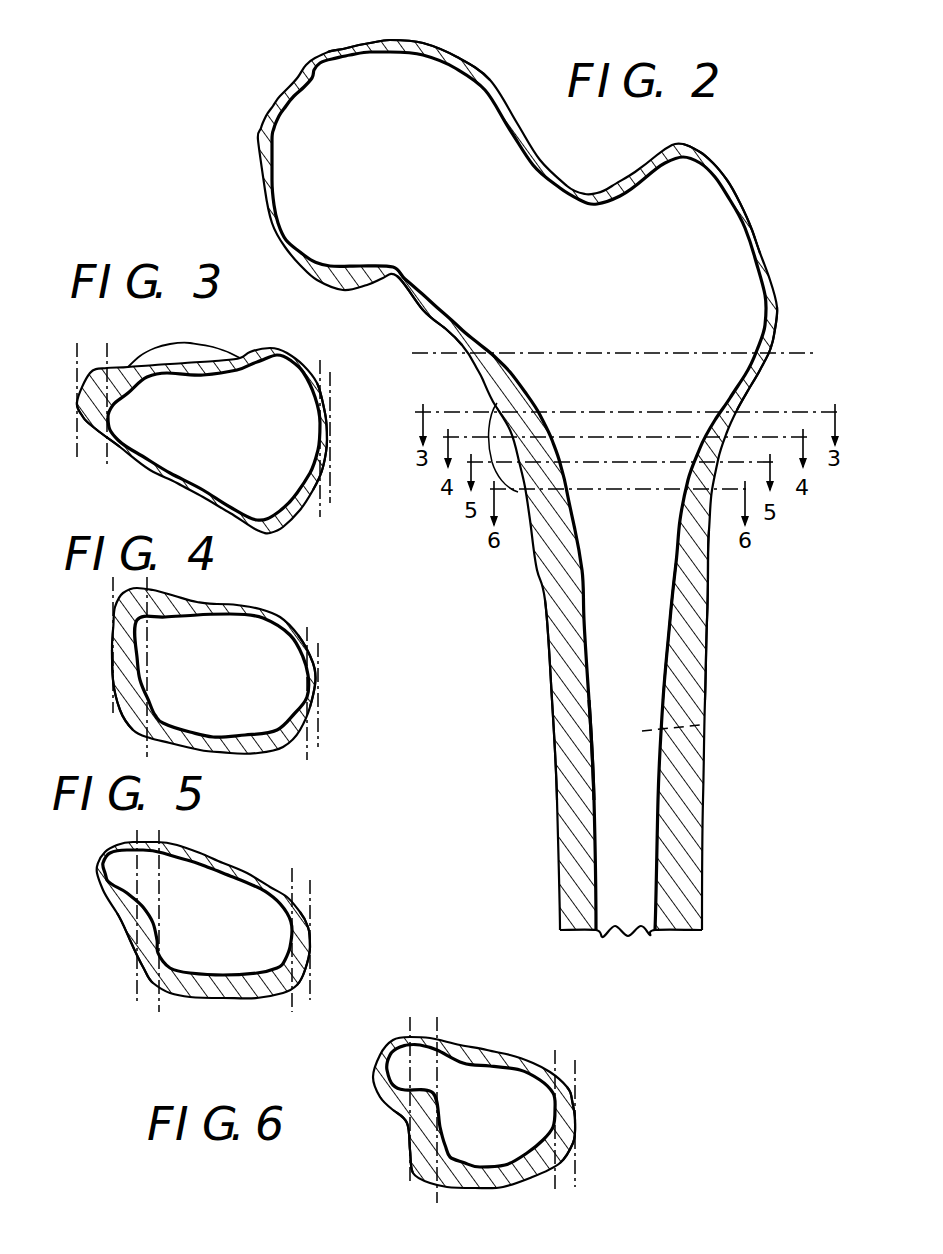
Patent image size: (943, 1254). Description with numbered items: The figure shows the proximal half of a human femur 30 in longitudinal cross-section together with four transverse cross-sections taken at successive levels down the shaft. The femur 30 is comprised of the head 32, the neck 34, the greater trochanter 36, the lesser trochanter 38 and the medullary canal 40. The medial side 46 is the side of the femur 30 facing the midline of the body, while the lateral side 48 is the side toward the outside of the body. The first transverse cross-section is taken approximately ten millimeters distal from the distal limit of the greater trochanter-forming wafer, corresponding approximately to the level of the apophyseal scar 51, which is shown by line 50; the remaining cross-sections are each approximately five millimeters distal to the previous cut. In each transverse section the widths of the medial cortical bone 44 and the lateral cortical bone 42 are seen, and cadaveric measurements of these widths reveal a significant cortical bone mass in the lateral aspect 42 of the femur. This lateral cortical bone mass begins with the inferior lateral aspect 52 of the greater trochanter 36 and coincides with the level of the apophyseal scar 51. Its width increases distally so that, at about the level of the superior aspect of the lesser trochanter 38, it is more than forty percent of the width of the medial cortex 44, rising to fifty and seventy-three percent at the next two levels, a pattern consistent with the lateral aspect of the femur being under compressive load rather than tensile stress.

In FIG. 2, the femur 30 is at (748, 792).
In FIG. 2, the head 32 is at (430, 73).
In FIG. 2, the neck 34 is at (432, 310).
In FIG. 2, the greater trochanter 36 is at (716, 218).
In FIG. 2, the lesser trochanter 38 is at (519, 493).
In FIG. 2, the medullary canal 40 is at (713, 717).
In FIG. 2, the lateral cortical bone 42 is at (706, 614).
In FIG. 3, the lateral cortical bone 42 is at (335, 445).
In FIG. 4, the lateral cortical bone 42 is at (315, 673).
In FIG. 5, the lateral cortical bone 42 is at (297, 935).
In FIG. 6, the lateral cortical bone 42 is at (563, 1103).
In FIG. 2, the medial cortical bone 44 is at (553, 643).
In FIG. 3, the medial cortical bone 44 is at (78, 402).
In FIG. 4, the medial cortical bone 44 is at (127, 683).
In FIG. 5, the medial cortical bone 44 is at (143, 945).
In FIG. 6, the medial cortical bone 44 is at (420, 1143).
In FIG. 2, the medial side 46 is at (560, 794).
In FIG. 2, the lateral side 48 is at (706, 681).
In FIG. 2, the line 50 is at (814, 353).
In FIG. 2, the apophyseal scar 51 is at (772, 351).
In FIG. 2, the inferior lateral aspect of the greater trochanter 52 is at (753, 366).